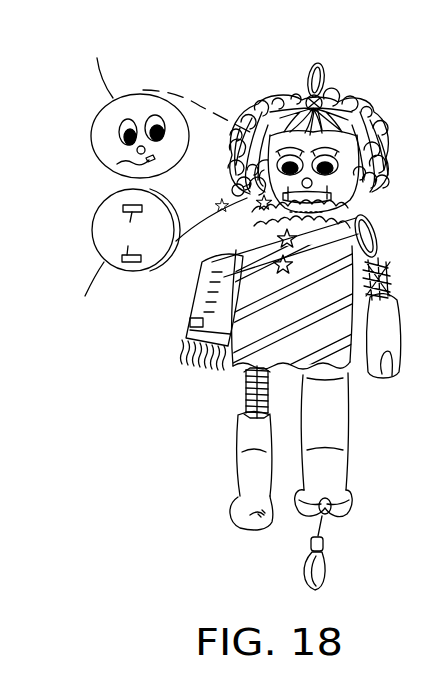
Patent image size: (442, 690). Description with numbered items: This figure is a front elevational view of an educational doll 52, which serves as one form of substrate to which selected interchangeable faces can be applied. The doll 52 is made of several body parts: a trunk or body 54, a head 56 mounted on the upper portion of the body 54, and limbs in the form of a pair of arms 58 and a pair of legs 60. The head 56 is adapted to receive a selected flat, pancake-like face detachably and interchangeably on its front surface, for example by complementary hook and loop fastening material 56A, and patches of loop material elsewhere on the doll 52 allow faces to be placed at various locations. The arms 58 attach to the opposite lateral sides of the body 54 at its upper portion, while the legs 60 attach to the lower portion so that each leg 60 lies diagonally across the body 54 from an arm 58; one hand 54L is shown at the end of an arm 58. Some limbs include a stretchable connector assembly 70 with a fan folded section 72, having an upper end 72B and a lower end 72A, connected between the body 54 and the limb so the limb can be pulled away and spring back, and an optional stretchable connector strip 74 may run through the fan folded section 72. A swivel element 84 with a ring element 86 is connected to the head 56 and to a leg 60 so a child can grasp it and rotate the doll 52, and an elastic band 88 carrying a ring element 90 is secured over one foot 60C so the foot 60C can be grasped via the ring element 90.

The educational doll 52 is at (284, 297).
The body 54 is at (300, 320).
The left hand 54L is at (404, 334).
The head 56 is at (267, 113).
The complementary hook and loop fastening material 56A is at (157, 259).
The arms 58 is at (200, 290).
The legs 60 is at (238, 440).
The feet 60C is at (343, 507).
The stretchable connector assemblies 70 is at (217, 412).
The fan folded sections 72 is at (270, 394).
The lower spring end 72A is at (256, 417).
The upper spring end 72B is at (243, 383).
The connector strips 74 is at (253, 402).
The swivel element 84 is at (325, 90).
The ring element 86 is at (307, 97).
The elastic band 88 is at (302, 523).
The ring element 90 is at (335, 498).